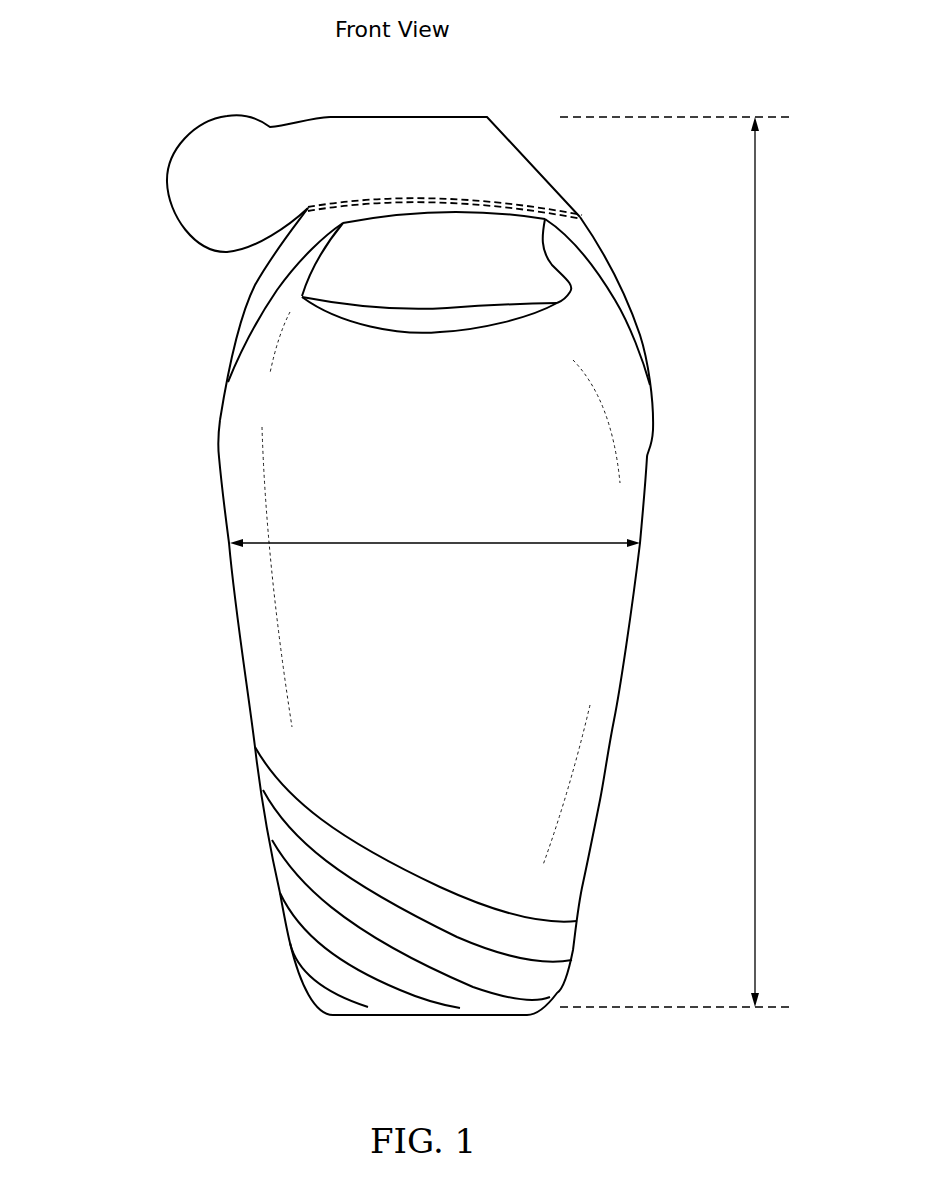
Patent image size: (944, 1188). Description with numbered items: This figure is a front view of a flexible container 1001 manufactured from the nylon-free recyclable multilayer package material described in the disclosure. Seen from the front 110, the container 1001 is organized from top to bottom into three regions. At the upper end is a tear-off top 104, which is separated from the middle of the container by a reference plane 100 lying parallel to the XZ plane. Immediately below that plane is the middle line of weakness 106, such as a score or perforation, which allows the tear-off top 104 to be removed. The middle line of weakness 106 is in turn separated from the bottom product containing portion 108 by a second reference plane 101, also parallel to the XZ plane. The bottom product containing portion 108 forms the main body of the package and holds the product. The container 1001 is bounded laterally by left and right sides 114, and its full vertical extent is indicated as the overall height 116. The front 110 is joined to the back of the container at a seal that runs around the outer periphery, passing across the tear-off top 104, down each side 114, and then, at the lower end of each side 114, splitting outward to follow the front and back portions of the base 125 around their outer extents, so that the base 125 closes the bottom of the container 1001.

The flexible container 1001 is at (160, 55).
The tear-off top 104 is at (370, 125).
The reference plane 100 is at (405, 194).
The middle line of weakness 106 is at (588, 210).
The reference plane 101 is at (430, 200).
The bottom product containing portion 108 is at (238, 293).
The front 110 is at (160, 472).
The left and right sides 114 is at (665, 465).
The overall height 116 is at (757, 655).
The base 125 is at (372, 1033).